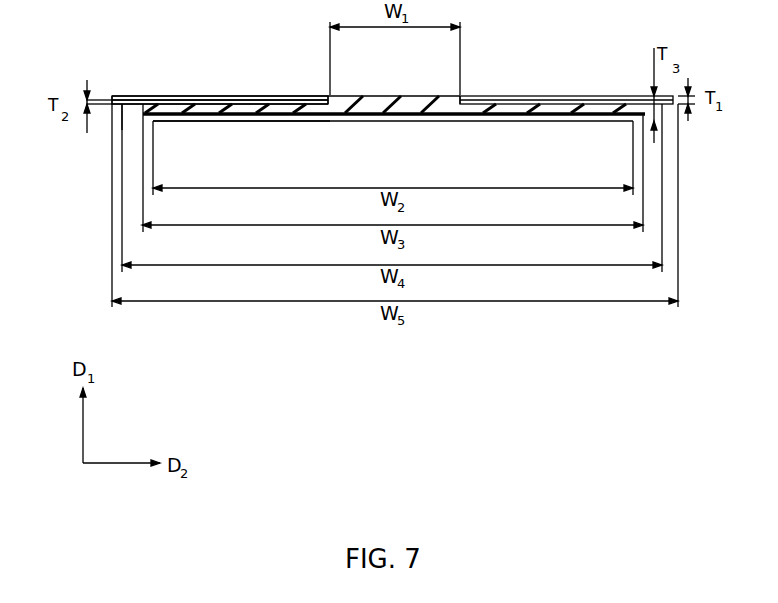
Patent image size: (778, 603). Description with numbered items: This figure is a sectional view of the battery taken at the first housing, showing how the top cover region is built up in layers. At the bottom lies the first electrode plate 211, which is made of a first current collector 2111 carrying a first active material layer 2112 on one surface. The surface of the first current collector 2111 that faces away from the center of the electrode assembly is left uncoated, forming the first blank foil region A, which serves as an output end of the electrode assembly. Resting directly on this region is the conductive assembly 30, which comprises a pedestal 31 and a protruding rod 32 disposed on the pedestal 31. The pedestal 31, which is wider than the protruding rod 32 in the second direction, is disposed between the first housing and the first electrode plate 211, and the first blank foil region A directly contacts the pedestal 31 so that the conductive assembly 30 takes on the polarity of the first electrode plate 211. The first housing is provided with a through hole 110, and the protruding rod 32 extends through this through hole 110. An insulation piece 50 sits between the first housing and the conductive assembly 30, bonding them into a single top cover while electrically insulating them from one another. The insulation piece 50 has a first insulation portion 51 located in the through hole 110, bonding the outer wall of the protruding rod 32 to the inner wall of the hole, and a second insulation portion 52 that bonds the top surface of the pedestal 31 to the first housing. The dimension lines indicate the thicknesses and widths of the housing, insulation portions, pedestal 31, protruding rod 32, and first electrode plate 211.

The through hole 110 is at (456, 102).
The first electrode plate 211 is at (220, 52).
The first current collector 2111 is at (165, 120).
The first active material layer 2112 is at (222, 120).
The insulation piece 50 is at (317, 52).
The first insulation portion 51 is at (322, 98).
The second insulation portion 52 is at (280, 100).
The conductive assembly 30 is at (519, 34).
The pedestal 31 is at (478, 110).
The protruding rod 32 is at (420, 98).
The first blank foil region A is at (363, 107).